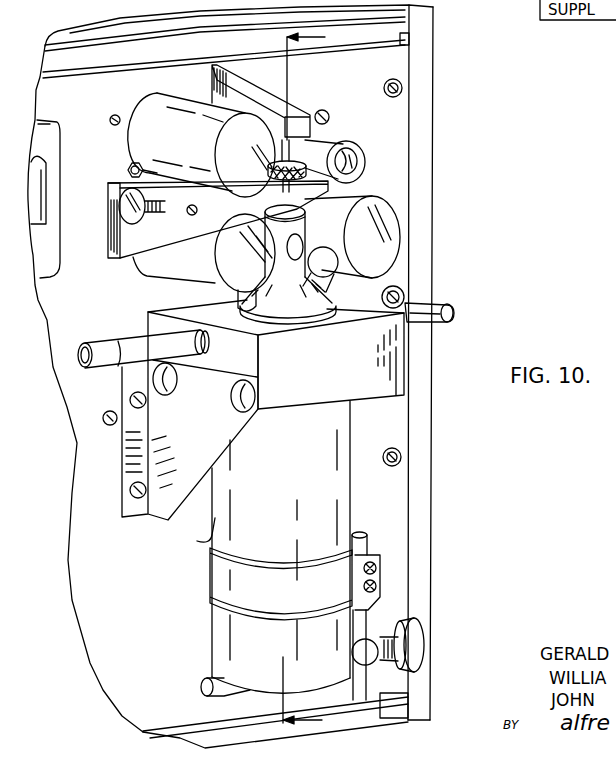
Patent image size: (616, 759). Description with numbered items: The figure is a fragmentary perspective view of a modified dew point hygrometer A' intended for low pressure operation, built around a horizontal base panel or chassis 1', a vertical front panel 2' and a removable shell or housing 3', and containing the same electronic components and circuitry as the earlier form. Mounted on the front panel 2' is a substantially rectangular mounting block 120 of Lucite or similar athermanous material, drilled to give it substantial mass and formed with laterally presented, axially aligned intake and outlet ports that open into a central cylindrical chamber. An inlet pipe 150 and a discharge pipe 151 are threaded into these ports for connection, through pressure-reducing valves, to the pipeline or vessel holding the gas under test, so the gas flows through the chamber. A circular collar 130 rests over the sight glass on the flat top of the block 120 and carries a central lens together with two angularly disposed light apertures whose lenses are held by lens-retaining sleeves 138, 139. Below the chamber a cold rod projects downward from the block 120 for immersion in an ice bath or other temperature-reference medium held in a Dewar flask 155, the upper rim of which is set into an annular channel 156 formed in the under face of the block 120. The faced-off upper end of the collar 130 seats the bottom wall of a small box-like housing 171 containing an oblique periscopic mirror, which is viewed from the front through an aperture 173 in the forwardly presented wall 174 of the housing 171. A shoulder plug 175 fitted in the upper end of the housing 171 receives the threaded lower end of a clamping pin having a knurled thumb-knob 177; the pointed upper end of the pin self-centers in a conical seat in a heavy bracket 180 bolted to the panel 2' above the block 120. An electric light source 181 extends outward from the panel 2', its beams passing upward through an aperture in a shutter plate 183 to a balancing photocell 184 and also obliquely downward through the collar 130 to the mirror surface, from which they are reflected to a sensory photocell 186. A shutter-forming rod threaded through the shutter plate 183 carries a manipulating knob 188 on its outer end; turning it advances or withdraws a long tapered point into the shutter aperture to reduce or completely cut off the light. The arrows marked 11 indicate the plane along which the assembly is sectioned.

The section line 11 is at (334, 727).
The mounting block 120 is at (400, 348).
The circular collar 130 is at (301, 310).
The lens-retaining sleeve 138 is at (250, 308).
The lens-retaining sleeve 139 is at (334, 270).
The inlet pipe 150 is at (112, 327).
The discharge pipe 151 is at (452, 310).
The Dewar flask 155 is at (209, 522).
The annular channel 156 is at (214, 634).
The box-like housing 171 is at (204, 253).
The aperture 173 is at (303, 241).
The forwardly presented wall 174 is at (293, 265).
The shoulder plug 175 is at (306, 211).
The knurled thumb-knob 177 is at (298, 152).
The bracket 180 is at (255, 46).
The electric light source 181 is at (178, 264).
The shutter plate 183 is at (130, 168).
The balancing photocell 184 is at (184, 145).
The sensory photocell 186 is at (378, 203).
The manipulating knob 188 is at (120, 208).
The horizontal base panel or chassis 1' is at (286, 724).
The vertical front panel 2' is at (427, 362).
The removable shell or housing 3' is at (443, 363).
The modified hygrometer A' is at (259, 368).